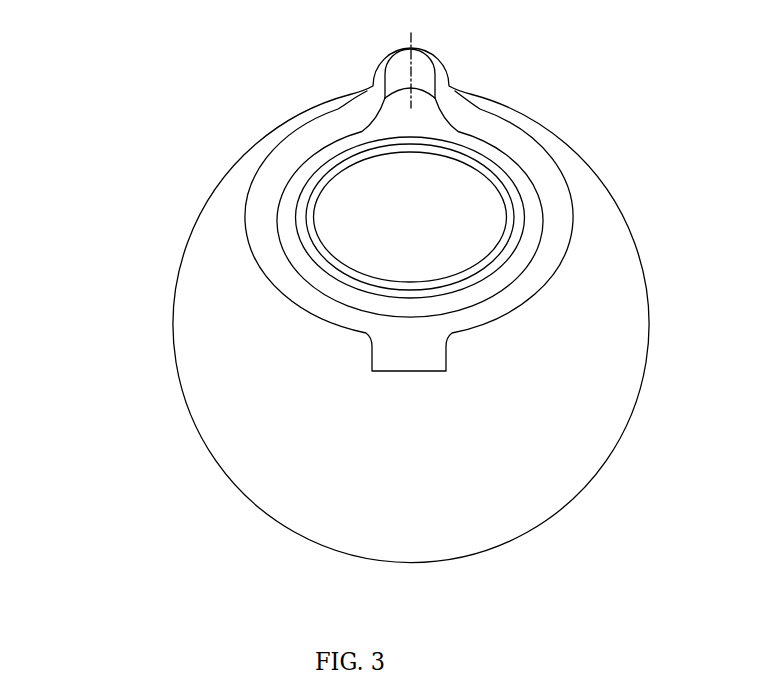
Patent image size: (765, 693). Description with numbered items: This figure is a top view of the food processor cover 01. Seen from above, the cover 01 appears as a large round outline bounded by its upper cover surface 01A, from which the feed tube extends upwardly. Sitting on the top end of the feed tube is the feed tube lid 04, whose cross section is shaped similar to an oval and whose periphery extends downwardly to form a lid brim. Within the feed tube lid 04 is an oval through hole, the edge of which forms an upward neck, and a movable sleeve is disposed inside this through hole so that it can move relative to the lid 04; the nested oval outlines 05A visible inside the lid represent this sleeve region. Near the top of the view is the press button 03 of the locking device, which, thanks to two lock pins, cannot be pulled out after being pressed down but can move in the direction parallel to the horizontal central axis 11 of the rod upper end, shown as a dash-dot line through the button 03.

The horizontal central axis 11 is at (411, 33).
The press button 03 is at (406, 82).
The feed tube lid 04 is at (284, 280).
The collar 05A is at (283, 217).
The food processor cover 01 is at (163, 363).
The upper cover surface 01A is at (268, 444).